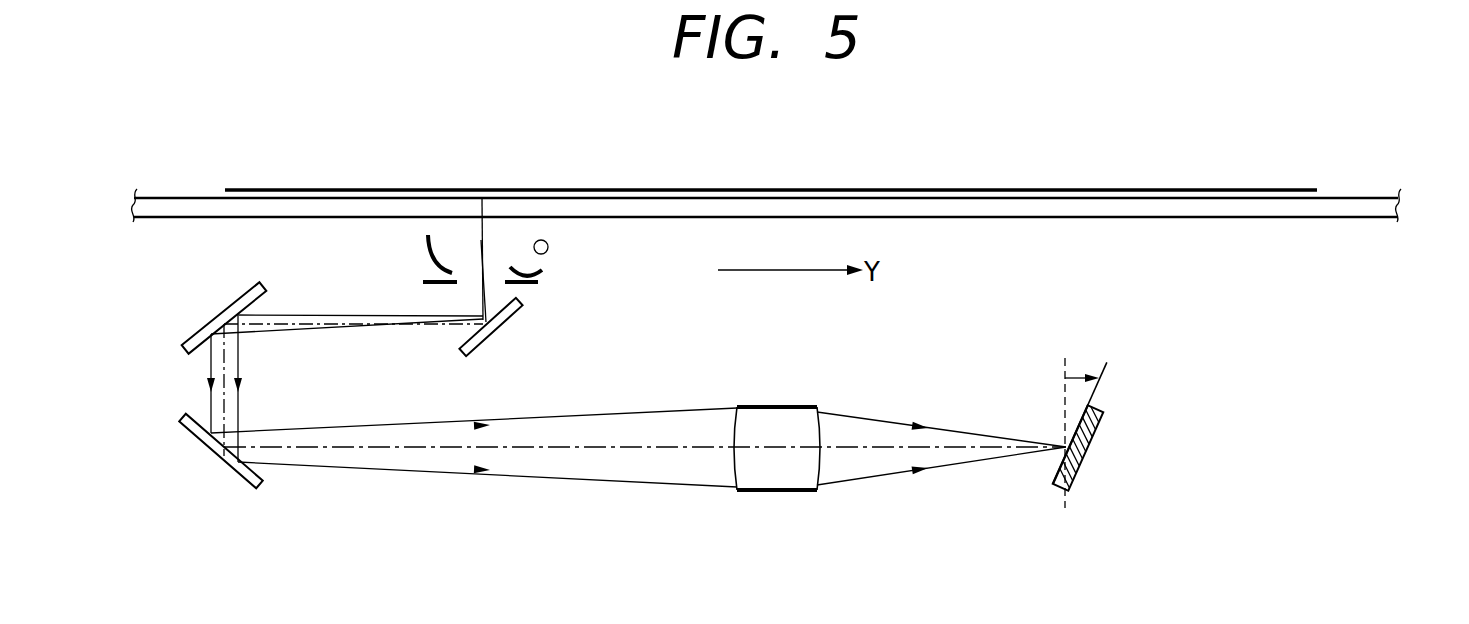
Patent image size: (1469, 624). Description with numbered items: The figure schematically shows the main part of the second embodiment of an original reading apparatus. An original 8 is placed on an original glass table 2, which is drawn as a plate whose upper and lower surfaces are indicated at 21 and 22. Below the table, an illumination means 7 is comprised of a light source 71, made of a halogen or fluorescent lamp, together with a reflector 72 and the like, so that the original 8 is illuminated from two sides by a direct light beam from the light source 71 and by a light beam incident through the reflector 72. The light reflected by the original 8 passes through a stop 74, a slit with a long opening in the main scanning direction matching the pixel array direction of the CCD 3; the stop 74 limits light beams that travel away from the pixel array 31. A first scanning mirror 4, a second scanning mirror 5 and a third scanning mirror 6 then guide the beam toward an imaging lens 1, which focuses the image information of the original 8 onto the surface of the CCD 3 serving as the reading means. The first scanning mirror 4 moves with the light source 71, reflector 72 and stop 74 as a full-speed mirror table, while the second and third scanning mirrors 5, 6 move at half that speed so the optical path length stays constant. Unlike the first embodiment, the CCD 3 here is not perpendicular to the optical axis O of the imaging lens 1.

The imaging lens 1 is at (775, 491).
The original glass table 2 is at (796, 223).
The upper surface of medium 21 is at (1360, 198).
The lower surface of medium 22 is at (1342, 220).
The CCD 3 is at (1063, 438).
The pixel array 31 is at (1057, 450).
The first scanning mirror 4 is at (497, 334).
The second scanning mirror 5 is at (213, 313).
The third scanning mirror 6 is at (210, 446).
The illumination means 7 is at (563, 281).
The light source 71 is at (548, 248).
The reflector 72 is at (434, 252).
The stop 74 is at (440, 284).
The original 8 is at (1277, 190).
The optical axis O is at (610, 447).